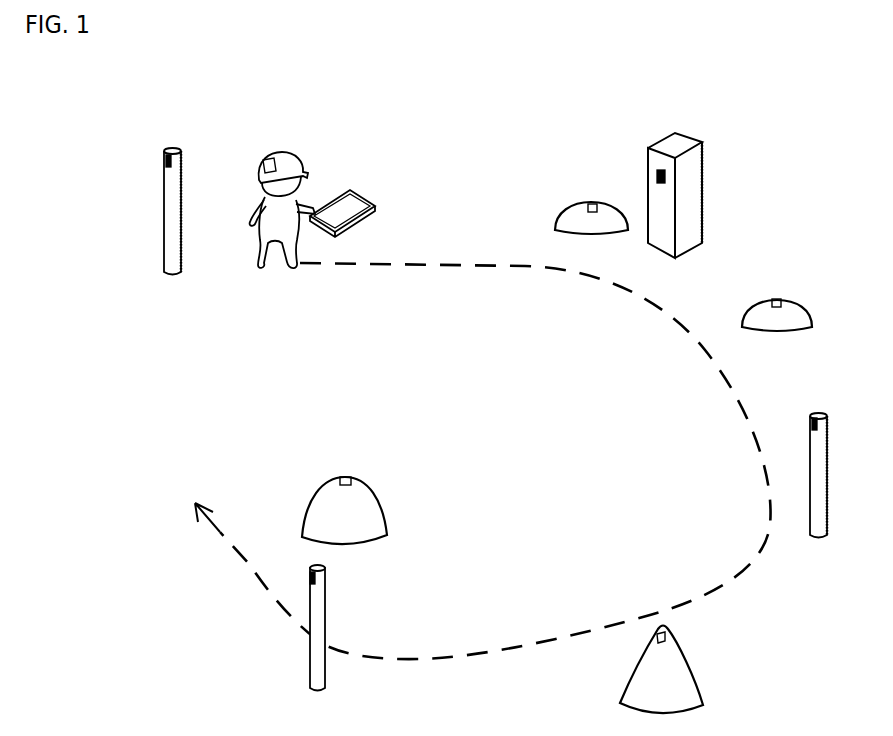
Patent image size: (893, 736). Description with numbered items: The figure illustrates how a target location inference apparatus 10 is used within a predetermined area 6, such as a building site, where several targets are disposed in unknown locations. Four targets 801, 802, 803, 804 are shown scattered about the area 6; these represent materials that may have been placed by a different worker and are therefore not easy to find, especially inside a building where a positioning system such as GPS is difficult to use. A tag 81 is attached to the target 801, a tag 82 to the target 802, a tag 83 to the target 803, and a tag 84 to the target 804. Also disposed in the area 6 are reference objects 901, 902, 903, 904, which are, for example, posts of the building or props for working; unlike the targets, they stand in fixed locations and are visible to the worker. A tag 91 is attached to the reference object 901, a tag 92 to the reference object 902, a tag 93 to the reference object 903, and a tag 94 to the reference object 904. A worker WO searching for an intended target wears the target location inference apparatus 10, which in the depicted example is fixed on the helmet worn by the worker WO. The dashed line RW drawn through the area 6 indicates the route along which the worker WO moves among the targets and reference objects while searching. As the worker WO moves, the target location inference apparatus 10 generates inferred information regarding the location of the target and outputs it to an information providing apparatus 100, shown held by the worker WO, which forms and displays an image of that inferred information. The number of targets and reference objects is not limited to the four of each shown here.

The predetermined area 6 is at (594, 123).
The target location inference apparatus 10 is at (267, 156).
The information providing apparatus 100 is at (350, 202).
The worker WO is at (269, 210).
The movement route RW is at (385, 268).
The tag 81 is at (590, 205).
The tag 82 is at (780, 300).
The tag 83 is at (657, 637).
The tag 84 is at (348, 477).
The target 801 is at (567, 220).
The target 802 is at (755, 312).
The target 803 is at (688, 685).
The target 804 is at (377, 517).
The tag 91 is at (166, 160).
The tag 92 is at (657, 174).
The tag 93 is at (812, 421).
The tag 94 is at (310, 575).
The reference object 901 is at (172, 220).
The reference object 902 is at (695, 195).
The reference object 903 is at (820, 478).
The reference object 904 is at (320, 610).